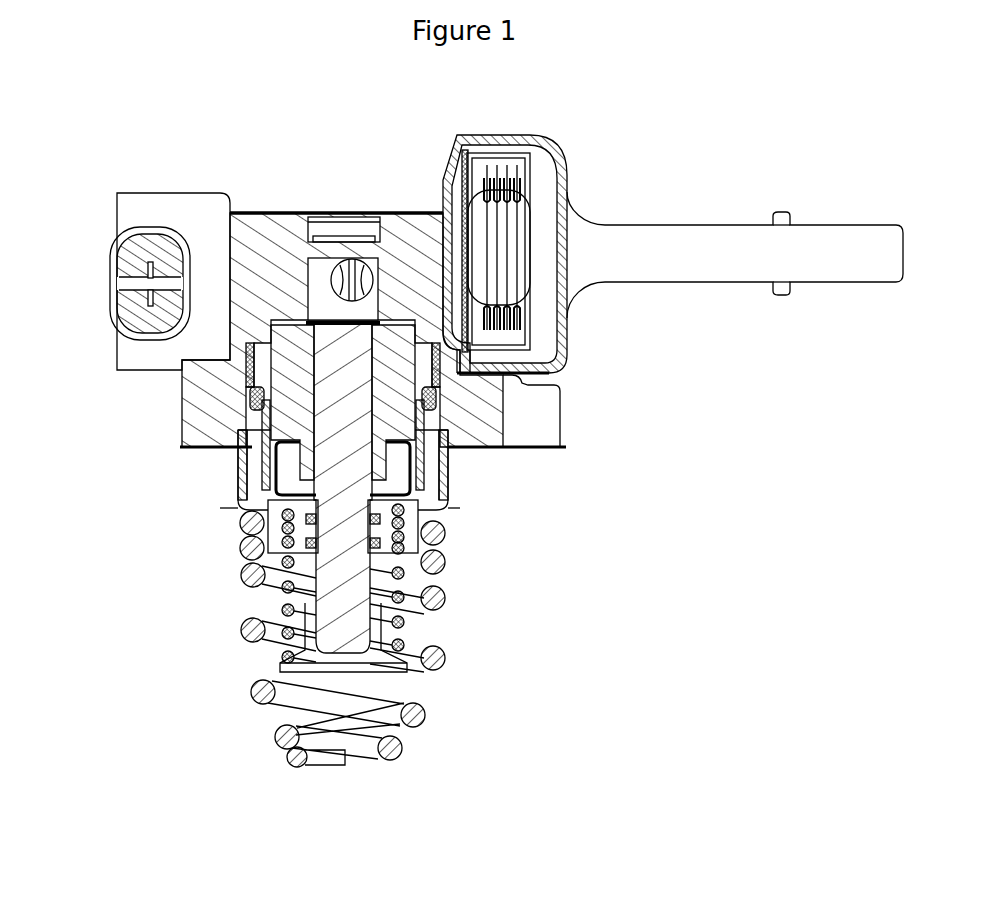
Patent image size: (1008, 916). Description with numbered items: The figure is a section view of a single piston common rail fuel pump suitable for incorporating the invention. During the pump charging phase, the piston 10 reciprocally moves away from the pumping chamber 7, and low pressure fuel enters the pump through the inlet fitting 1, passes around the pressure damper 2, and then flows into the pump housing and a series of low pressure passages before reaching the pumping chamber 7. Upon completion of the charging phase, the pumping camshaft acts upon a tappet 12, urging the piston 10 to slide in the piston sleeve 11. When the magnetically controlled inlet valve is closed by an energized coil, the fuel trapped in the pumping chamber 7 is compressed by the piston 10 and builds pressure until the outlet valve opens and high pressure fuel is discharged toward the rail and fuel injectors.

The inlet fitting 1 is at (668, 220).
The pressure damper 2 is at (523, 197).
The pumping chamber 7 is at (322, 282).
The piston 10 is at (312, 398).
The piston sleeve 11 is at (400, 413).
The tappet 12 is at (350, 653).